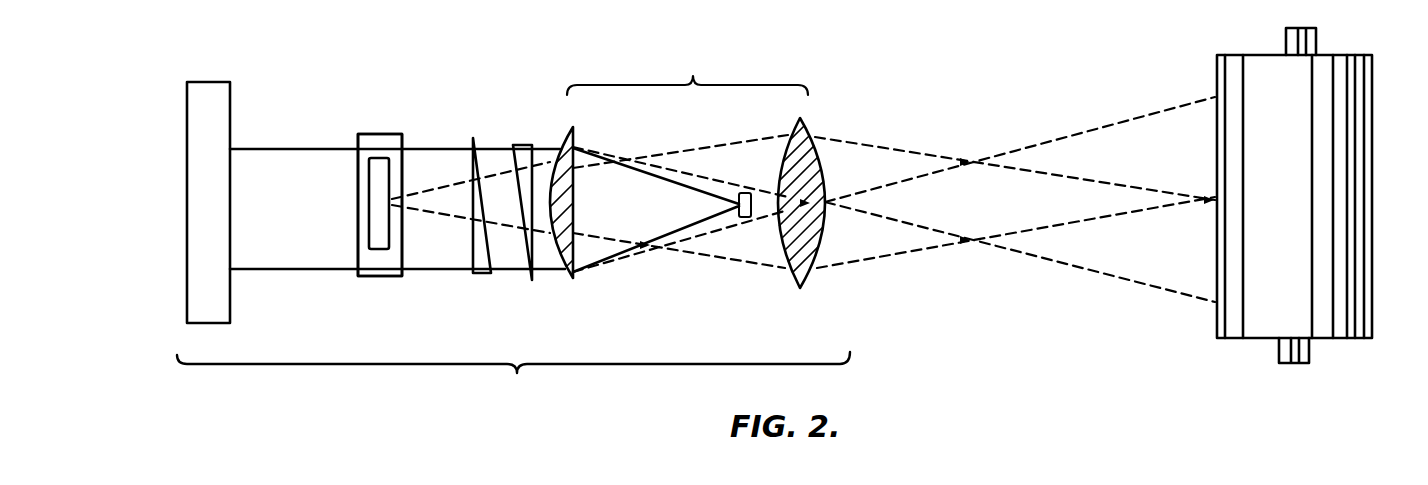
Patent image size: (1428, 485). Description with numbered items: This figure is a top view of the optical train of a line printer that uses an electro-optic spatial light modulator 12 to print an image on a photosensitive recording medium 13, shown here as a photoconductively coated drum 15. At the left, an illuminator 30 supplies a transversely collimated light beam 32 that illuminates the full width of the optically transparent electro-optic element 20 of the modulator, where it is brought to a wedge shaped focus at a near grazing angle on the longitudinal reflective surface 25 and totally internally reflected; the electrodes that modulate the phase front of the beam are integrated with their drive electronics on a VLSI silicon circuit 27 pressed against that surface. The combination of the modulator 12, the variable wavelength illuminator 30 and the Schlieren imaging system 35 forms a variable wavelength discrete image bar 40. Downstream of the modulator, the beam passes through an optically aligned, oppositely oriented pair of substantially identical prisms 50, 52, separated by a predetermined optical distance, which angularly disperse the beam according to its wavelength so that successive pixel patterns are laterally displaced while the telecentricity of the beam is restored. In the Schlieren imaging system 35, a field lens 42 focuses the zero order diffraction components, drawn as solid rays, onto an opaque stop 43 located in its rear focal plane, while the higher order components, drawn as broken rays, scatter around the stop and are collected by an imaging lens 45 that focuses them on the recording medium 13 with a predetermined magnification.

The electro-optic spatial light modulator 12 is at (360, 193).
The photosensitive recording medium 13 is at (1247, 250).
The photoconductively coated drum 15 is at (1272, 193).
The electro-optic element 20 is at (385, 277).
The reflective surface 25 is at (358, 178).
The VLSI silicon circuit 27 is at (375, 205).
The illuminator 30 is at (187, 120).
The light beam 32 is at (316, 250).
The Schlieren imaging system 35 is at (687, 70).
The variable wavelength discrete image bar 40 is at (513, 380).
The field lens 42 is at (566, 277).
The opaque stop 43 is at (745, 193).
The imaging lens 45 is at (810, 132).
The prism 50 is at (481, 275).
The prism 52 is at (521, 144).